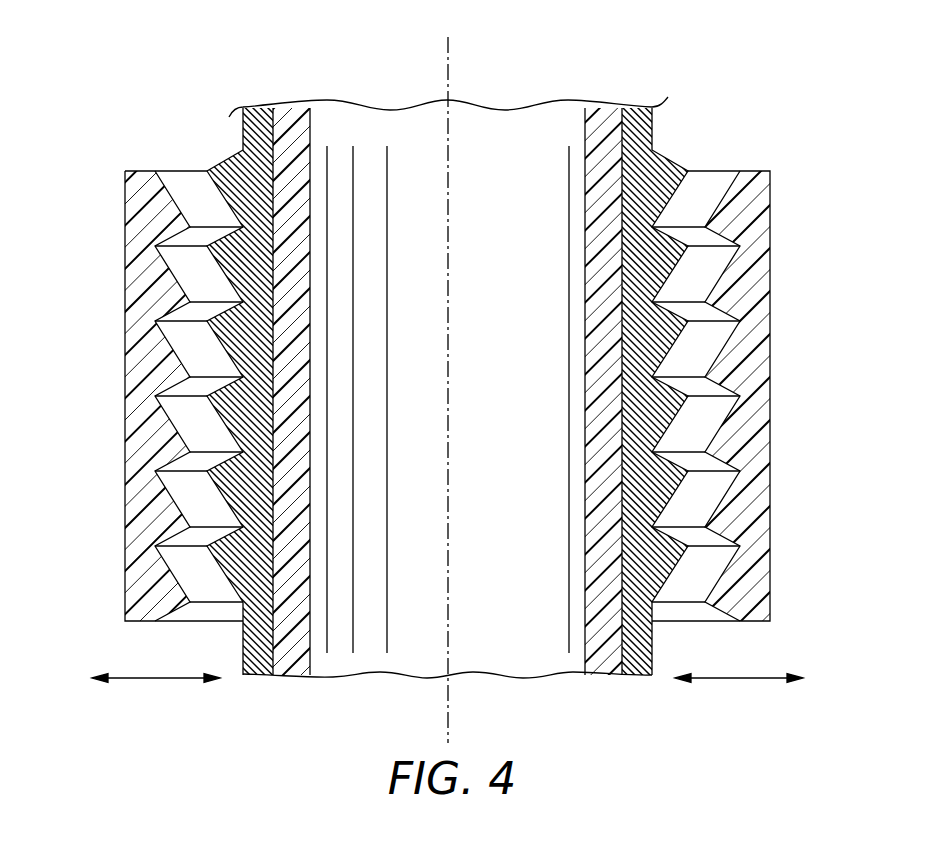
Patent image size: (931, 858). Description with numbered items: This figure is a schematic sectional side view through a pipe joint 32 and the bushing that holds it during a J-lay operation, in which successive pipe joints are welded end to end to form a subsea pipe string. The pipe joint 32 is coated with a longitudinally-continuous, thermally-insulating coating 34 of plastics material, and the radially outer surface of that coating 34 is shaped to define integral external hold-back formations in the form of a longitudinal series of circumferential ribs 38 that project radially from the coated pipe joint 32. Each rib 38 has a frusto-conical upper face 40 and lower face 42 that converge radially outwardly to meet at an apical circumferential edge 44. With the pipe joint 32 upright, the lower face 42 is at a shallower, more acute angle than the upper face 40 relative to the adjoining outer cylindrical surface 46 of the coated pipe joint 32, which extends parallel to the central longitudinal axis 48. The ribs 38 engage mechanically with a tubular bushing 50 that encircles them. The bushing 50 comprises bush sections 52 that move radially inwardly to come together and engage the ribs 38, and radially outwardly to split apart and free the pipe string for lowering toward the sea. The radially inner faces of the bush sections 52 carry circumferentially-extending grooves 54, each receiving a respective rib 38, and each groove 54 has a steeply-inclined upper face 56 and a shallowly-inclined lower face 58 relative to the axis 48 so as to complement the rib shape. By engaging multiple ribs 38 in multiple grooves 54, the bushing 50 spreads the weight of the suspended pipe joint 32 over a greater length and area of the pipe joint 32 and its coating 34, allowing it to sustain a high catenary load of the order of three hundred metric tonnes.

The pipe joint 32 is at (447, 384).
The thermally-insulating coating 34 is at (653, 112).
The ribs 38 is at (673, 164).
The upper face 40 is at (233, 157).
The lower face 42 is at (212, 187).
The apical circumferential edge 44 is at (207, 170).
The outer cylindrical surface 46 is at (243, 113).
The central longitudinal axis 48 is at (451, 57).
The tubular bushing 50 is at (421, 376).
The bush sections 52 is at (125, 362).
The grooves 54 is at (740, 398).
The upper face of groove 56 is at (712, 386).
The lower face of groove 58 is at (700, 434).